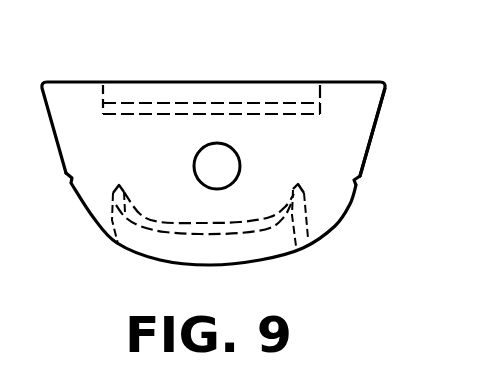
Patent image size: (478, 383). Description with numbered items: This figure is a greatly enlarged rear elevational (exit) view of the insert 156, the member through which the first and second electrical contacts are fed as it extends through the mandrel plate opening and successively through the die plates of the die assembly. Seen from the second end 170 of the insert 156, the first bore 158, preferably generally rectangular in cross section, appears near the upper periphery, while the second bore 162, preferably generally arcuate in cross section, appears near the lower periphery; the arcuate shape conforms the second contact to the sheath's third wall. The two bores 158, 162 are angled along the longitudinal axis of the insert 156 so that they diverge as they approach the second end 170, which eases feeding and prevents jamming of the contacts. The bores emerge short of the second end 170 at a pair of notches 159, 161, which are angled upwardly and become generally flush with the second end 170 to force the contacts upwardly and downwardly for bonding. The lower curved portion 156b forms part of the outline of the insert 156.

The insert 156 is at (237, 173).
The curved lower portion of body member 156b is at (333, 197).
The first bore 158 is at (256, 110).
The notch 159 is at (104, 100).
The notch 161 is at (119, 246).
The second bore 162 is at (302, 247).
The second end 170 is at (353, 134).